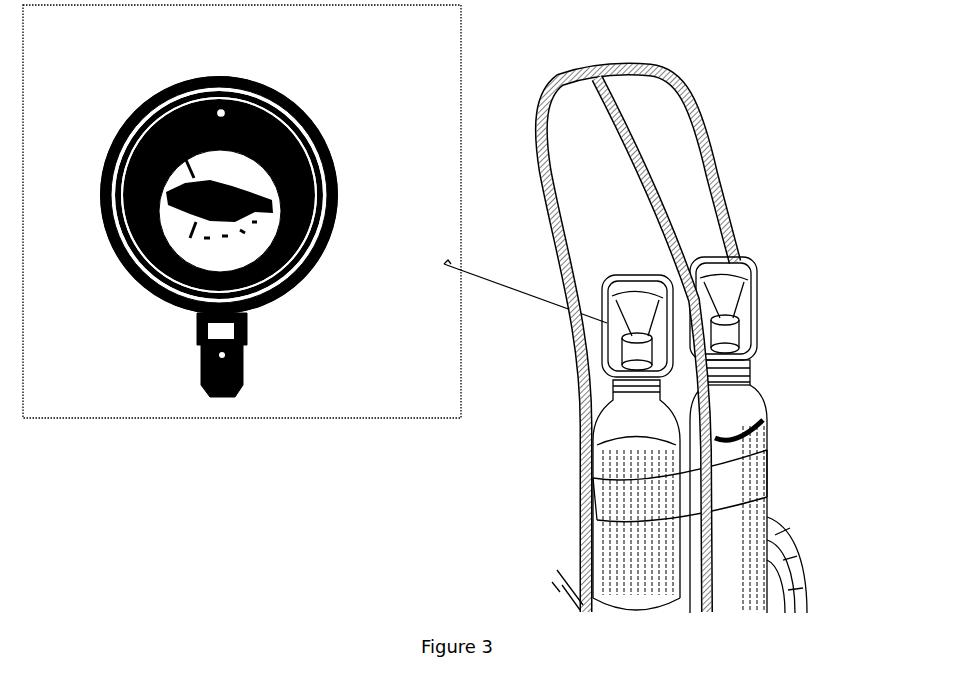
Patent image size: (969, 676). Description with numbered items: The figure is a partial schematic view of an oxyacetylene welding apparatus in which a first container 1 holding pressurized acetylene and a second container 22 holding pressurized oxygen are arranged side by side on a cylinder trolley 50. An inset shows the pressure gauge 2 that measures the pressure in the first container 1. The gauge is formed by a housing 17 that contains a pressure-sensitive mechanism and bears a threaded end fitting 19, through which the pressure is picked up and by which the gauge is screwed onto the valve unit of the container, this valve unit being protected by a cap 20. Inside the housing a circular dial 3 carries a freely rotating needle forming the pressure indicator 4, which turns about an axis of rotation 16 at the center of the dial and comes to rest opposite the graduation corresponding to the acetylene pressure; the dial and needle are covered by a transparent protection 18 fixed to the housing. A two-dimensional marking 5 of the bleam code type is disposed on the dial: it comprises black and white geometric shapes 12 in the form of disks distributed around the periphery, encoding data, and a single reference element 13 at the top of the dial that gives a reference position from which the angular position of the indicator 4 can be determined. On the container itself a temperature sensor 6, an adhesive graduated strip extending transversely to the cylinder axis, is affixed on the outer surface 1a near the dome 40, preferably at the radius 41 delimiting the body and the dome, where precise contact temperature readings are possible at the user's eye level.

The first container 1 is at (782, 562).
The outer surface 1a is at (768, 515).
The pressure gauge 2 is at (340, 193).
The dial 3 is at (167, 97).
The pressure indicator 4 is at (101, 247).
The two-dimensional marking 5 is at (123, 287).
The temperature sensor 6 is at (770, 438).
The geometric shapes 12 is at (335, 183).
The reference element 13 is at (220, 106).
The axis of rotation 16 is at (124, 284).
The housing 17 is at (311, 277).
The transparent protection 18 is at (282, 69).
The threaded end fitting 19 is at (200, 364).
The cap 20 is at (752, 268).
The second container 22 is at (577, 385).
The dome 40 is at (758, 382).
The radius 41 is at (763, 401).
The cylinder trolley 50 is at (587, 80).